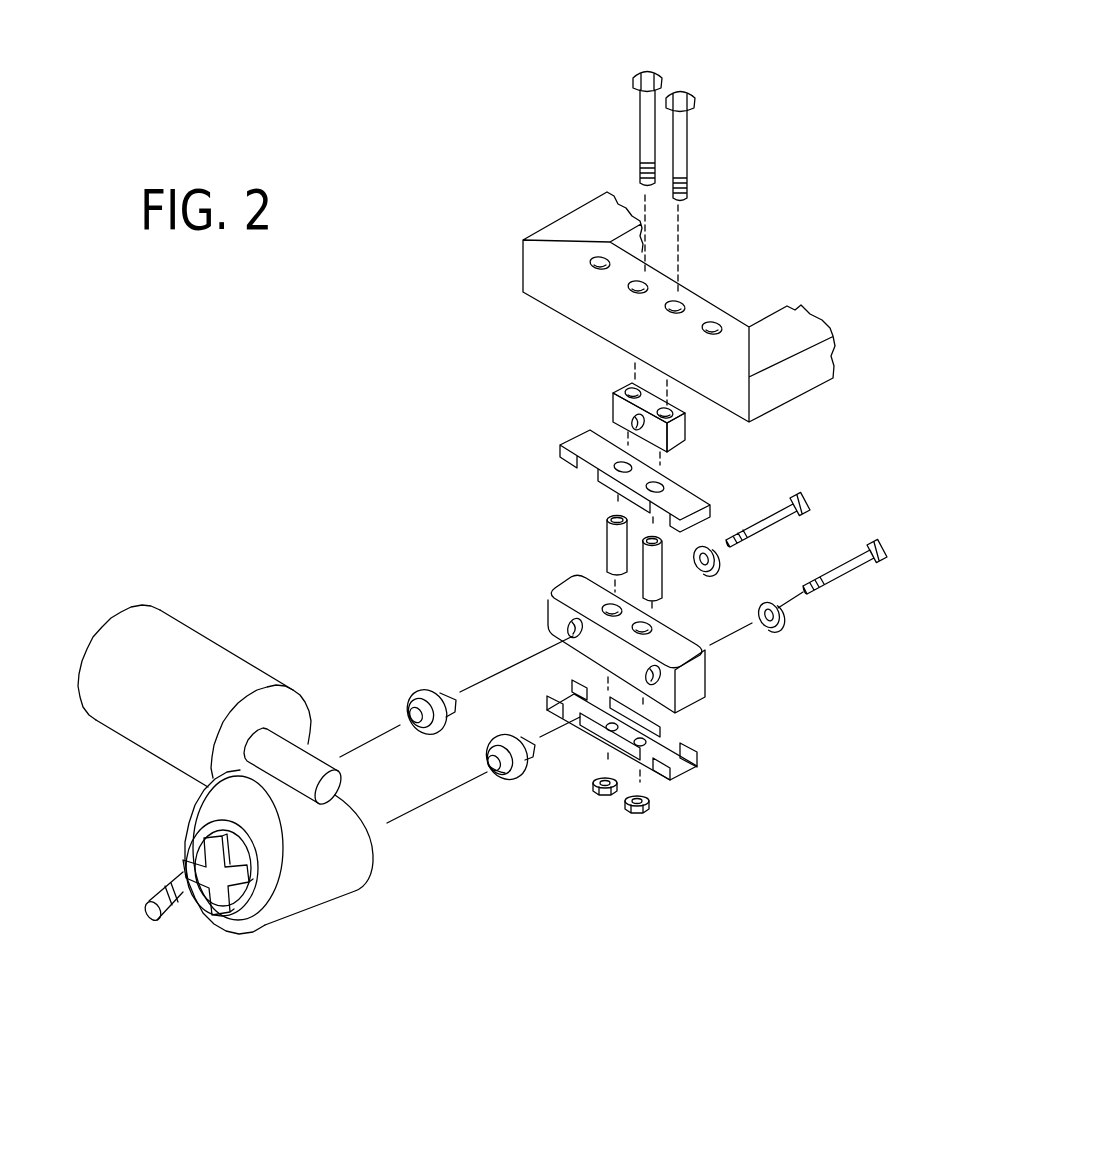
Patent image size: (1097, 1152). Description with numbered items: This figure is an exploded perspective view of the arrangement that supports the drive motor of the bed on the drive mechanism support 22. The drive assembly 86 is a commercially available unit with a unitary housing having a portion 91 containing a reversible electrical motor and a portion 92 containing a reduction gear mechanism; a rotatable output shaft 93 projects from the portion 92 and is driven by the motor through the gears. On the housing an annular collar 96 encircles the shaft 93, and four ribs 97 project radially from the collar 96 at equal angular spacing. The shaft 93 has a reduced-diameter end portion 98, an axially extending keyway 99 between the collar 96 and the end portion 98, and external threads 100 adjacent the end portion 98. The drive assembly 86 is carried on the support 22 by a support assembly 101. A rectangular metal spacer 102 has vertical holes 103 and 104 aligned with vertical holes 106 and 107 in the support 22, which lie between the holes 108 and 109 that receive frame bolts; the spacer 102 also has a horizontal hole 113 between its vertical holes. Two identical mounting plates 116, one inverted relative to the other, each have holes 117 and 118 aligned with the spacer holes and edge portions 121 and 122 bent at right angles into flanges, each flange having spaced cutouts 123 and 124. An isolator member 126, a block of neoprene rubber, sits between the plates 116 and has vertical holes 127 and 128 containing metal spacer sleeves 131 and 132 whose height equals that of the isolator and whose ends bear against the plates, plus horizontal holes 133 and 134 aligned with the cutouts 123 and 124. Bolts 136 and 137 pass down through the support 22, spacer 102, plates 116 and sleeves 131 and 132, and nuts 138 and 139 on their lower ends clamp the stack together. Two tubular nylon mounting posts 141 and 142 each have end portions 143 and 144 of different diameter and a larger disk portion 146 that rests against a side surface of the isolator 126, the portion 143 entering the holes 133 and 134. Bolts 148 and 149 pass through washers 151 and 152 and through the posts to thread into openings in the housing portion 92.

The drive mechanism support 22 is at (538, 272).
The drive assembly 86 is at (224, 782).
The housing portion containing motor 91 is at (205, 662).
The housing portion containing reduction gear mechanism 92 is at (330, 873).
The output shaft 93 is at (146, 915).
The annular collar 96 is at (220, 917).
The ribs 97 is at (252, 925).
The end portion 98 is at (152, 898).
The keyway 99 is at (178, 879).
The external threads 100 is at (184, 920).
The support assembly 101 is at (620, 539).
The spacer 102 is at (675, 438).
The vertical hole 103 is at (622, 382).
The vertical hole 104 is at (637, 427).
The vertical hole 106 is at (628, 290).
The vertical hole 107 is at (680, 304).
The vertical hole 108 is at (590, 266).
The vertical hole 109 is at (714, 326).
The hole 113 is at (630, 420).
The mounting plates 116 is at (583, 442).
The hole 117 is at (660, 725).
The hole 118 is at (663, 743).
The edge portion 121 is at (697, 760).
The edge portion 122 is at (690, 777).
The cutout 123 is at (570, 727).
The cutout 124 is at (648, 765).
The isolator member 126 is at (622, 651).
The vertical hole 127 is at (603, 610).
The vertical hole 128 is at (651, 625).
The spacer sleeve 131 is at (608, 545).
The spacer sleeve 132 is at (660, 592).
The horizontal hole 133 is at (568, 628).
The horizontal hole 134 is at (661, 675).
The bolt 136 is at (645, 68).
The bolt 137 is at (681, 85).
The nut 138 is at (604, 797).
The nut 139 is at (635, 813).
The mounting post 141 is at (418, 687).
The mounting post 142 is at (500, 787).
The end portion 143 is at (531, 758).
The end portion 144 is at (510, 773).
The disk portion 146 is at (517, 780).
The bolt 148 is at (810, 502).
The bolt 149 is at (888, 548).
The washer 151 is at (713, 567).
The washer 152 is at (782, 623).